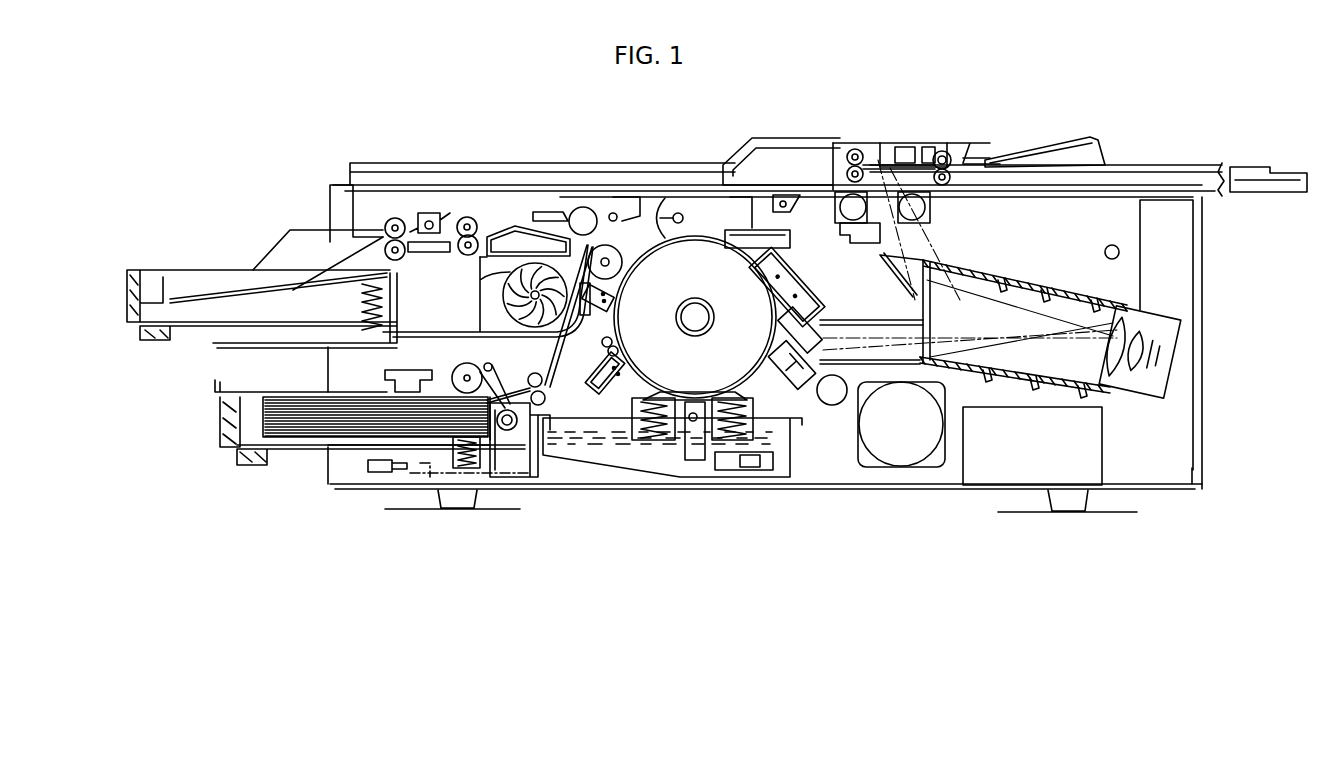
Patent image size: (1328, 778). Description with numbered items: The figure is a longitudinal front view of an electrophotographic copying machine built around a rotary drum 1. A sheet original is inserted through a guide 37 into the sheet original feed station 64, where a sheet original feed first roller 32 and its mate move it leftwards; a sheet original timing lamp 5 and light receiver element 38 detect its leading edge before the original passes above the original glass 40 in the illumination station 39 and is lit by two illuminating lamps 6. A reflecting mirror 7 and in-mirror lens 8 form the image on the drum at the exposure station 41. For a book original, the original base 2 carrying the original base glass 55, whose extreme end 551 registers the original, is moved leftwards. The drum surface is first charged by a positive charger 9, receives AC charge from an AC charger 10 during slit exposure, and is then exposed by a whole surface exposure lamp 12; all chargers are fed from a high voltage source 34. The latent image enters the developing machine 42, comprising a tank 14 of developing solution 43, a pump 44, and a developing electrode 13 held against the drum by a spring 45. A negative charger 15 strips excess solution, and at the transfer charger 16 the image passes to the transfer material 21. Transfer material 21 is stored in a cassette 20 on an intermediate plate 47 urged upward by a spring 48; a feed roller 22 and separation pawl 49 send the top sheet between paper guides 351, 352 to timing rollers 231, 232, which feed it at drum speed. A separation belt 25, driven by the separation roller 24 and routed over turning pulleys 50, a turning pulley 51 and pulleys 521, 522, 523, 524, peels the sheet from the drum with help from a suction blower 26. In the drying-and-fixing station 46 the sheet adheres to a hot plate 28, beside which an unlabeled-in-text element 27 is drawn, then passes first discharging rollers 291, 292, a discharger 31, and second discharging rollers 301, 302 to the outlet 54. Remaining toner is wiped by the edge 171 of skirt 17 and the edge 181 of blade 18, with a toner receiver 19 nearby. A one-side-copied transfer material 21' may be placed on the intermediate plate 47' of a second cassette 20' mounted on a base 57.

The rotary drum 1 is at (766, 356).
The original base 2 is at (1145, 152).
The sheet original timing lamp 5 is at (936, 150).
The illuminating lamps 6 is at (850, 212).
The reflecting mirror 7 is at (892, 280).
The in-mirror lens 8 is at (1140, 315).
The positive charger 9 is at (796, 248).
The AC charger 10 is at (805, 340).
The whole surface exposure lamp 12 is at (832, 405).
The developing electrode 13 is at (748, 398).
The tank 14 is at (610, 465).
The negative charger 15 is at (695, 385).
The transfer charger 16 is at (592, 305).
The skirt 17 is at (728, 232).
The edge of skirt 171 is at (715, 238).
The blade 18 is at (775, 255).
The edge of blade 181 is at (760, 245).
The toner receiver 19 is at (760, 309).
The cassette 20 is at (370, 442).
The cassette 20' is at (262, 323).
The transfer material 21 is at (736, 298).
The transfer material 21' is at (354, 307).
The feed roller 22 is at (455, 368).
The separation roller 24 is at (620, 268).
The separation belt 25 is at (628, 242).
The suction blower 26 is at (512, 300).
The guide plate 27 is at (548, 212).
The hot plate 28 is at (492, 230).
The first discharging roller 291 is at (468, 256).
The first discharging roller 292 is at (468, 216).
The second discharging roller 301 is at (398, 258).
The second discharging roller 302 is at (402, 208).
The discharger 31 is at (430, 213).
The sheet original feed first roller 32 is at (950, 160).
The high voltage source 34 is at (980, 470).
The paper guide 351 is at (522, 384).
The paper guide 352 is at (532, 463).
The guide 37 is at (1065, 142).
The light receiver element 38 is at (925, 178).
The illumination station 39 is at (880, 160).
The original glass 40 is at (848, 178).
The exposure station 41 is at (847, 174).
The developing machine 42 is at (672, 455).
The developing solution 43 is at (580, 470).
The pump 44 is at (755, 470).
The spring 45 is at (655, 440).
The drying-and-fixing station 46 is at (526, 220).
The intermediate plate 47 is at (433, 461).
The intermediate plate 47' is at (276, 297).
The spring 48 is at (462, 470).
The separation pawl 49 is at (506, 392).
The turning pulleys 50 is at (586, 208).
The turning pulley 51 is at (618, 366).
The pulley 521 is at (618, 342).
The pulley 522 is at (616, 212).
The pulley 523 is at (603, 298).
The pulley 524 is at (605, 312).
The outlet 54 is at (383, 238).
The original base glass 55 is at (1215, 186).
The extreme end of the glass 551 is at (990, 160).
The base 57 is at (270, 262).
The sheet original feed station 64 is at (905, 142).
The timing roller 232 is at (545, 385).
The timing roller 231 is at (545, 425).